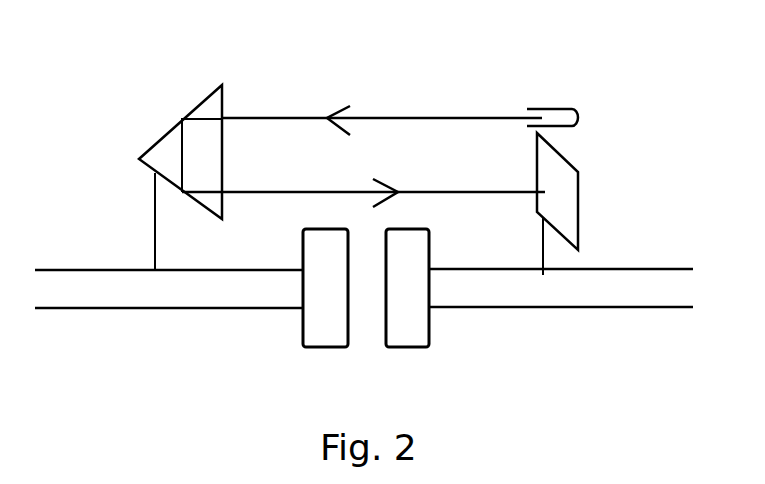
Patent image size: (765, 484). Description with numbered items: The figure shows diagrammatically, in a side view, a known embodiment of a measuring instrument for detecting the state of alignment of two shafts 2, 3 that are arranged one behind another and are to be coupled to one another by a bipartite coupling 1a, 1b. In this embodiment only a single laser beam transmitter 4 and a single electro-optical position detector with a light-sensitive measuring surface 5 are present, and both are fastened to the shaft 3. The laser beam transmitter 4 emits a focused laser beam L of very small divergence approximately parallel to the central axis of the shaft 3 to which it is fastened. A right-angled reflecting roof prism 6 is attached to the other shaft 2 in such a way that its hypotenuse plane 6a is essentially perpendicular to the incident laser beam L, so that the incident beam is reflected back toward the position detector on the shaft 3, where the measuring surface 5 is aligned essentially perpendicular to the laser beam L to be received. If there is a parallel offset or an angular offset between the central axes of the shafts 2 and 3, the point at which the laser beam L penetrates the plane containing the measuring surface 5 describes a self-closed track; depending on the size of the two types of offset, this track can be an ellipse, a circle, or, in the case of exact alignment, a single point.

The coupling half 1a is at (322, 333).
The coupling half 1b is at (405, 333).
The shaft 2 is at (172, 297).
The shaft 3 is at (513, 292).
The laser beam transmitter 4 is at (563, 115).
The light-sensitive measuring surface 5 is at (567, 177).
The right-angled reflecting roof prism 6 is at (162, 158).
The hypotenuse plane 6a is at (222, 100).
The laser beam L is at (433, 188).